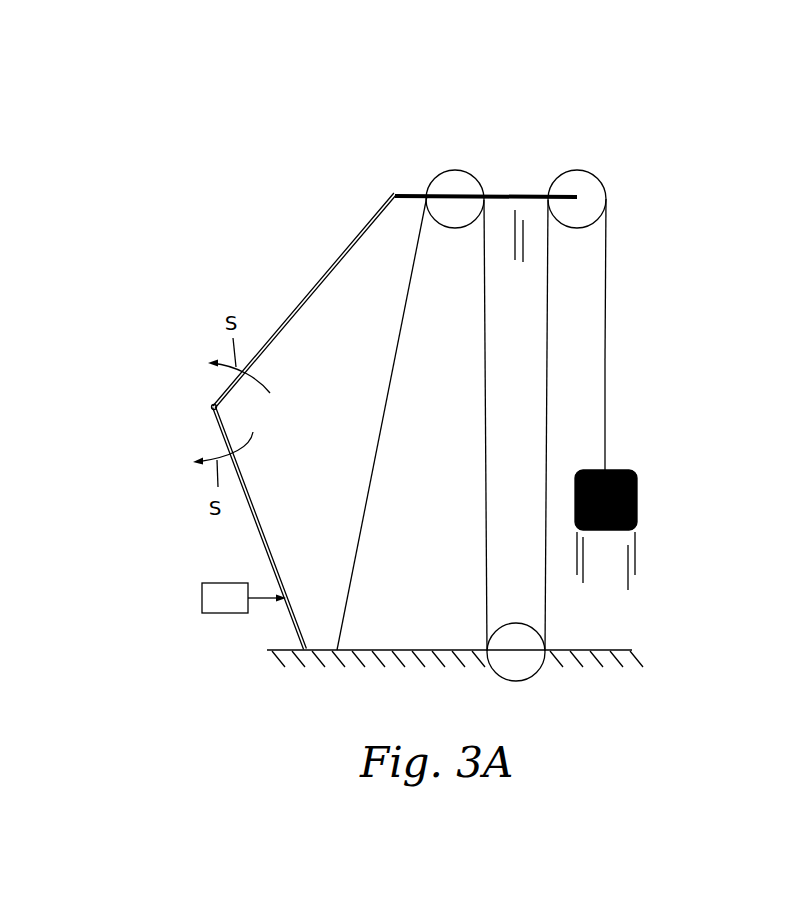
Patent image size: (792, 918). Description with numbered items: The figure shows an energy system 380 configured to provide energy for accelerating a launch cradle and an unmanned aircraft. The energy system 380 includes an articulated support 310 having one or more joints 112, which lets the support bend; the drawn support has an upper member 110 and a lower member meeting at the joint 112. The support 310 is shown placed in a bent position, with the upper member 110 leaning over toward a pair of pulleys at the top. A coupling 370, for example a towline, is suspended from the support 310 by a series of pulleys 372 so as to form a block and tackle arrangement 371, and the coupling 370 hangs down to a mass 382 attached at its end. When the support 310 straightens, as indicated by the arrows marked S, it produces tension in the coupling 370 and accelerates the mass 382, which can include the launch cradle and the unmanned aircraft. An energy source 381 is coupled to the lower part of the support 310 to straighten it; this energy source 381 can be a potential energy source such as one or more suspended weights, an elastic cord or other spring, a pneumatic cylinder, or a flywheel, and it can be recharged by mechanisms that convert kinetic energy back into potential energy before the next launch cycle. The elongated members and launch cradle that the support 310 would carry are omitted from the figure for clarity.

The upper arm segment 110 is at (312, 290).
The joint 112 is at (211, 407).
The articulated support 310 is at (226, 275).
The coupling 370 is at (606, 355).
The block and tackle arrangement 371 is at (638, 406).
The pulley 372 is at (462, 178).
The energy system 380 is at (691, 204).
The energy source 381 is at (202, 598).
The mass 382 is at (636, 510).